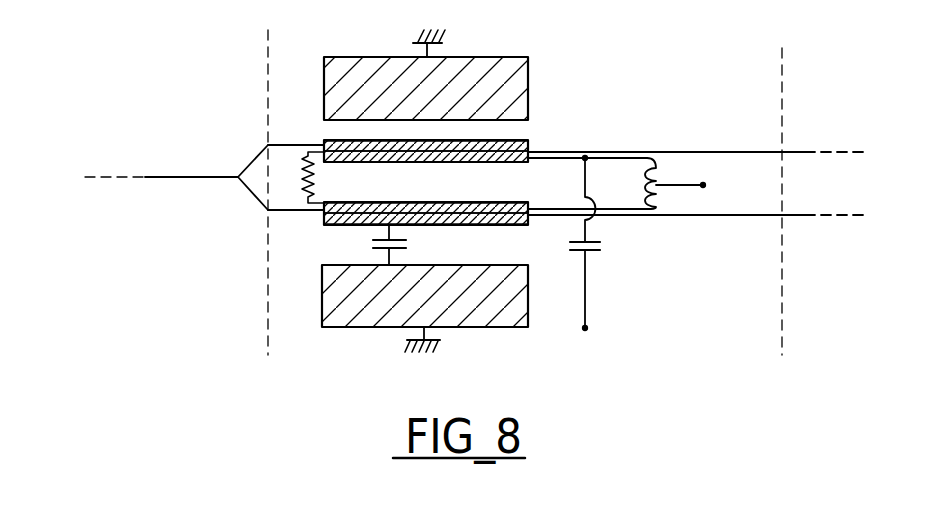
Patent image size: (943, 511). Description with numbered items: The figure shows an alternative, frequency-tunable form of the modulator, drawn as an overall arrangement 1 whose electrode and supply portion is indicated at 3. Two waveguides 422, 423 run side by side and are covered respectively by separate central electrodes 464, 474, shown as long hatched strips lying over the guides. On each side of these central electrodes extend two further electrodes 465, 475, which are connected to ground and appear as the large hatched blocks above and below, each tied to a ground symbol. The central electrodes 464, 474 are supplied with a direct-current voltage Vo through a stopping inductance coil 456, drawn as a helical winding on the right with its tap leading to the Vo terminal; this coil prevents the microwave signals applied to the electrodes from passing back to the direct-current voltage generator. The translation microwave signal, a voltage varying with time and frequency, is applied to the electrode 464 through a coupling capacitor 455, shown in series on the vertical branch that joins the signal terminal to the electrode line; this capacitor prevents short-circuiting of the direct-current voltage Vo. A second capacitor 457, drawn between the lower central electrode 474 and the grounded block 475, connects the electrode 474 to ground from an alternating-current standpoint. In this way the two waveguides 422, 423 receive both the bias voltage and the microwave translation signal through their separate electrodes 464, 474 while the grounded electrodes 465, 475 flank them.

The electro-optical sampling system 1 is at (248, 240).
The sampling device 3 is at (538, 320).
The waveguide 422 is at (293, 93).
The waveguide 423 is at (303, 212).
The coupling capacitor 455 is at (598, 252).
The stopping inductance coil 456 is at (664, 160).
The capacitor 457 is at (409, 248).
The central electrode 464 is at (528, 140).
The ground electrode 465 is at (520, 88).
The central electrode 474 is at (511, 226).
The ground electrode 475 is at (480, 312).